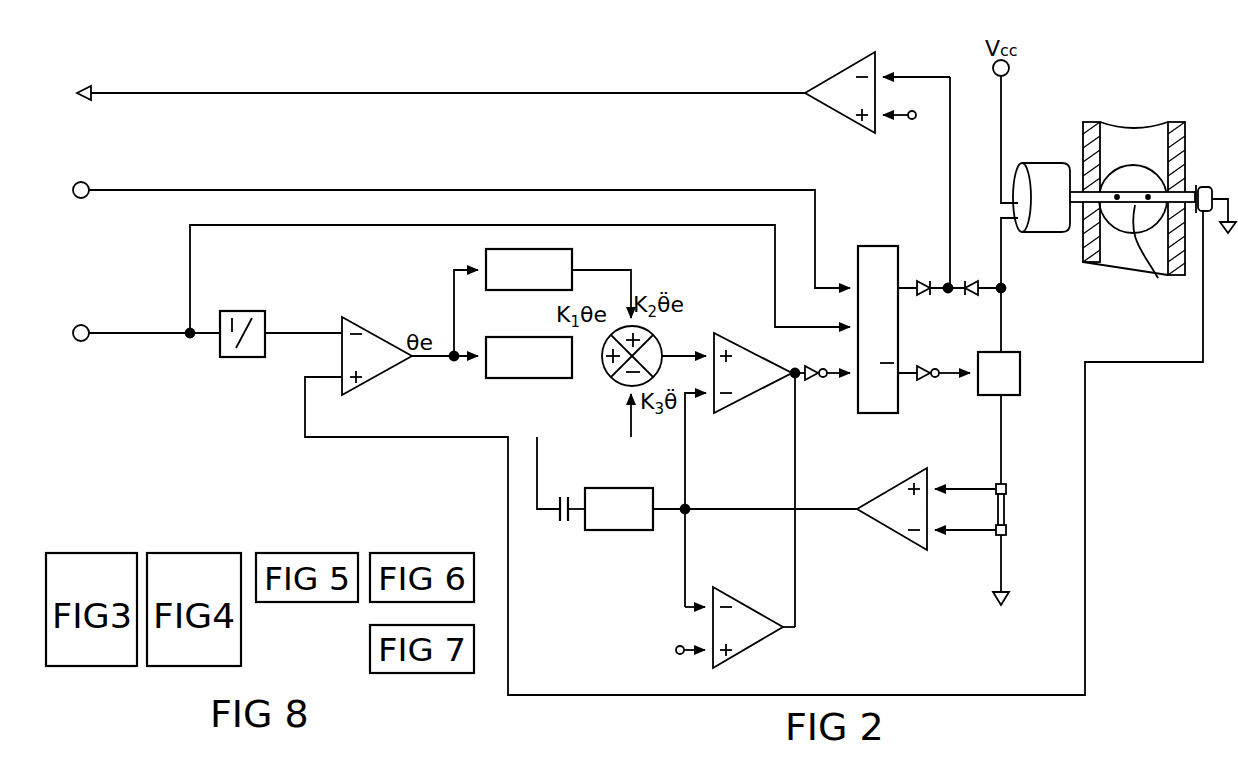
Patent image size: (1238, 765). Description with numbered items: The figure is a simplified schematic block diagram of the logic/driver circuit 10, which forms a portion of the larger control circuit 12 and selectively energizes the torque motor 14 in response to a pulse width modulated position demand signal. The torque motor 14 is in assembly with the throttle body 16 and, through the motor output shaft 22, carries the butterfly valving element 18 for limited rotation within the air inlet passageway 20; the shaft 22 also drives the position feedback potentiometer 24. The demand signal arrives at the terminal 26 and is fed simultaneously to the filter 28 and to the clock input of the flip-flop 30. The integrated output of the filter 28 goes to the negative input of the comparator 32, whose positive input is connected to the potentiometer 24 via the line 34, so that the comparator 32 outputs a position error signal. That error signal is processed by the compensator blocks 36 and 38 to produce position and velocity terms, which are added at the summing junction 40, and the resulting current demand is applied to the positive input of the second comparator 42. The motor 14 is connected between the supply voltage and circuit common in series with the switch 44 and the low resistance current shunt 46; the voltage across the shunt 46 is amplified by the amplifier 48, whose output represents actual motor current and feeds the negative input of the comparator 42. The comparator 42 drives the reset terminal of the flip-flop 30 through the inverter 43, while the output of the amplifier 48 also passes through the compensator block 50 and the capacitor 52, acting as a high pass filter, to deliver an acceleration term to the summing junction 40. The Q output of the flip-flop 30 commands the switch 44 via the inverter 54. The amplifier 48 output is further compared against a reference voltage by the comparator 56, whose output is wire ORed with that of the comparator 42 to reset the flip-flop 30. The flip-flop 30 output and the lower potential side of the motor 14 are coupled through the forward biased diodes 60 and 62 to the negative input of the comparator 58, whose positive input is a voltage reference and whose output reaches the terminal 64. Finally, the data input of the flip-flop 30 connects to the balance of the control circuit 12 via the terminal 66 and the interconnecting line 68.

The logic/driver circuit 10 is at (580, 80).
The control circuit 12 is at (340, 72).
The torque motor 14 is at (1047, 172).
The throttle body 16 is at (1146, 126).
The butterfly valving element 18 is at (1128, 176).
The air inlet passageway 20 is at (1112, 248).
The motor output shaft 22 is at (1153, 258).
The position feedback potentiometer 24 is at (1208, 186).
The terminal 26 is at (92, 338).
The filter 28 is at (246, 312).
The flip-flop 30 is at (868, 248).
The comparator 32 is at (380, 340).
The line 34 is at (1118, 362).
The compensator block 36 is at (552, 378).
The compensator block 38 is at (576, 264).
The summing junction 40 is at (653, 346).
The second comparator 42 is at (752, 388).
The inverter 43 is at (818, 362).
The switch 44 is at (1000, 374).
The current shunt 46 is at (1008, 506).
The amplifier 48 is at (888, 522).
The compensator block 50 is at (640, 532).
The capacitor 52 is at (566, 524).
The inverter 54 is at (930, 384).
The comparator 56 is at (748, 634).
The comparator 58 is at (836, 85).
The diode 60 is at (924, 280).
The diode 62 is at (972, 296).
The terminal 64 is at (90, 90).
The terminal 66 is at (90, 186).
The interconnecting line 68 is at (468, 188).